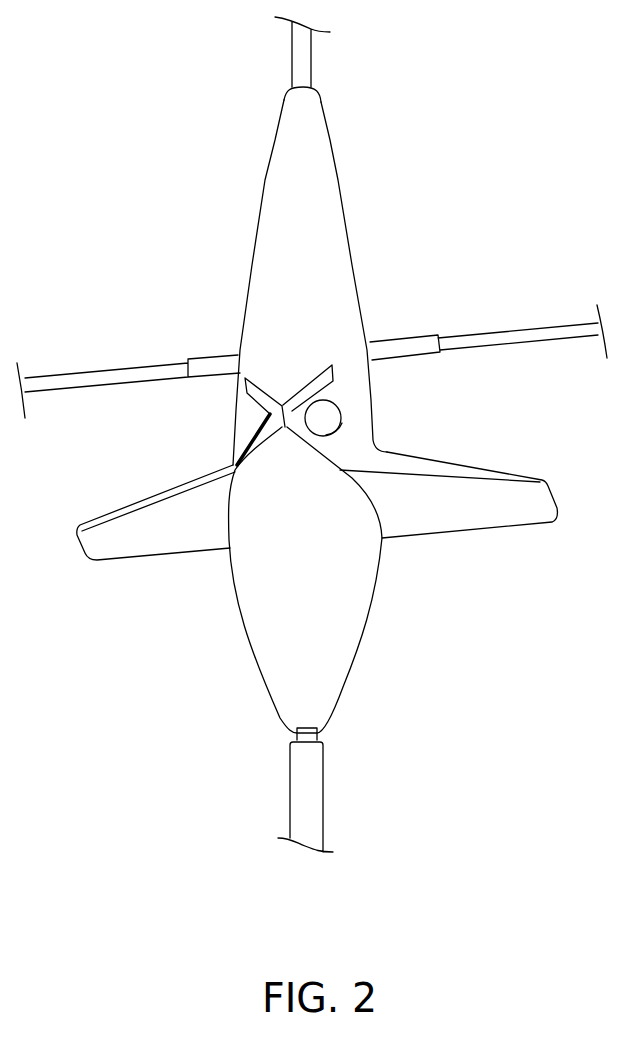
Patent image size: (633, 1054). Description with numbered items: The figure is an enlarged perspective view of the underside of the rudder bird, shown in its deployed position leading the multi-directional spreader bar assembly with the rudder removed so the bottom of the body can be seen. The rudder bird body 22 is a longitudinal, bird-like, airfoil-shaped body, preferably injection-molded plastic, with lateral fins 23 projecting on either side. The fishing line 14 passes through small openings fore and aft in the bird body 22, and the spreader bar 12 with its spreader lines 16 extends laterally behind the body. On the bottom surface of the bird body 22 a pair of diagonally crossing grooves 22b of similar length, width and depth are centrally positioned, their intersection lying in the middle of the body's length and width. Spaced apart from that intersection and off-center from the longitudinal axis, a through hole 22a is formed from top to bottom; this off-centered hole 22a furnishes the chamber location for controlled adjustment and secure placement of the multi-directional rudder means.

The spreader bar 12 is at (493, 333).
The fishing line 14 is at (290, 792).
The spreader lines 16 is at (311, 58).
The rudder bird body 22 is at (367, 625).
The through hole 22a is at (342, 412).
The diagonal grooves 22b is at (262, 422).
The lateral fins 23 is at (85, 522).